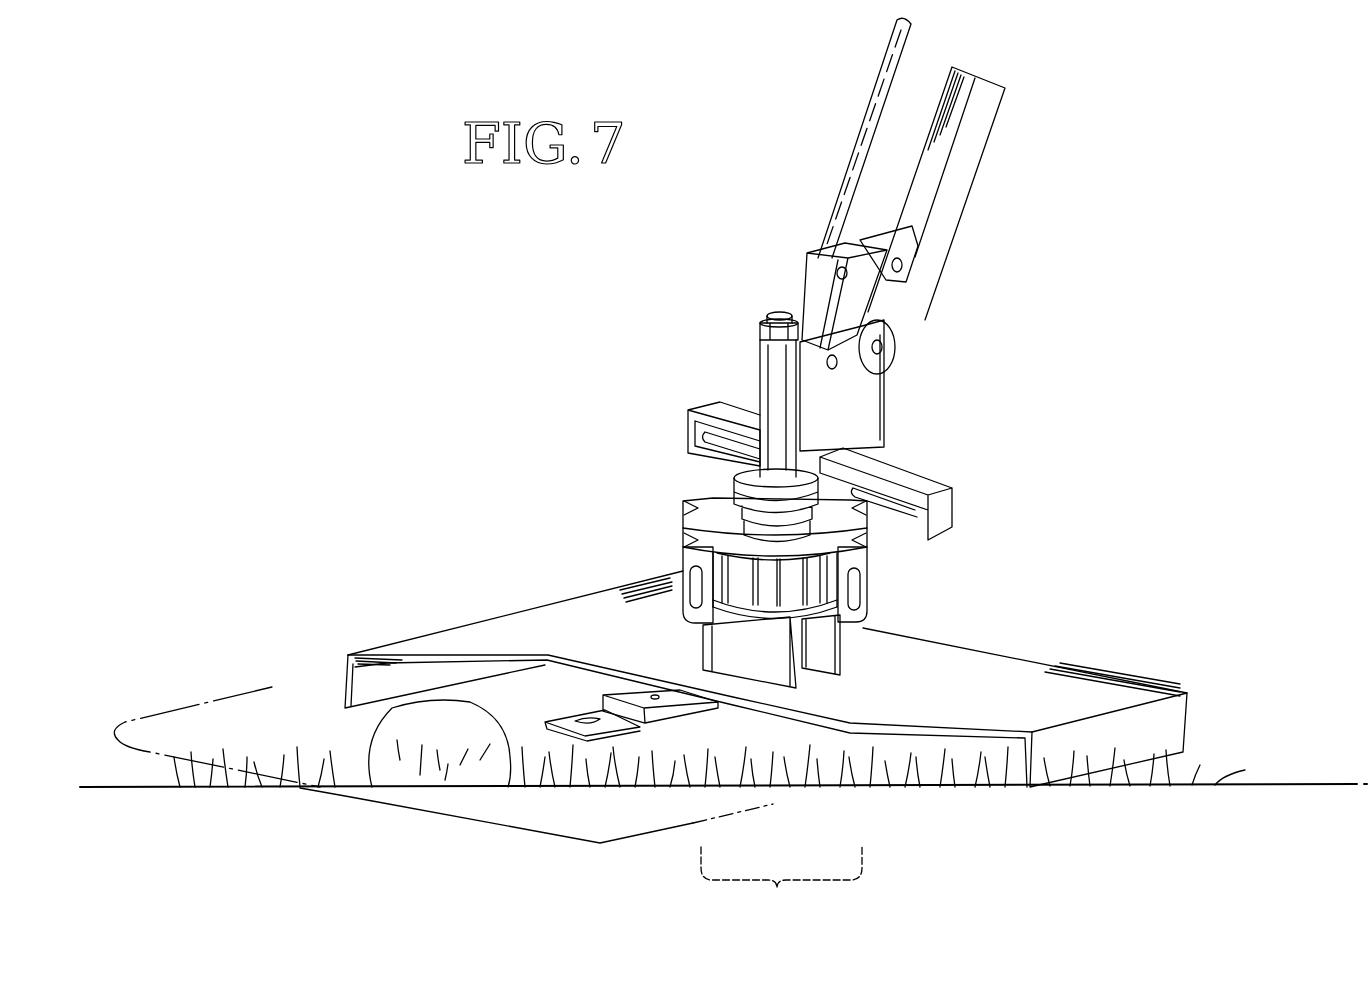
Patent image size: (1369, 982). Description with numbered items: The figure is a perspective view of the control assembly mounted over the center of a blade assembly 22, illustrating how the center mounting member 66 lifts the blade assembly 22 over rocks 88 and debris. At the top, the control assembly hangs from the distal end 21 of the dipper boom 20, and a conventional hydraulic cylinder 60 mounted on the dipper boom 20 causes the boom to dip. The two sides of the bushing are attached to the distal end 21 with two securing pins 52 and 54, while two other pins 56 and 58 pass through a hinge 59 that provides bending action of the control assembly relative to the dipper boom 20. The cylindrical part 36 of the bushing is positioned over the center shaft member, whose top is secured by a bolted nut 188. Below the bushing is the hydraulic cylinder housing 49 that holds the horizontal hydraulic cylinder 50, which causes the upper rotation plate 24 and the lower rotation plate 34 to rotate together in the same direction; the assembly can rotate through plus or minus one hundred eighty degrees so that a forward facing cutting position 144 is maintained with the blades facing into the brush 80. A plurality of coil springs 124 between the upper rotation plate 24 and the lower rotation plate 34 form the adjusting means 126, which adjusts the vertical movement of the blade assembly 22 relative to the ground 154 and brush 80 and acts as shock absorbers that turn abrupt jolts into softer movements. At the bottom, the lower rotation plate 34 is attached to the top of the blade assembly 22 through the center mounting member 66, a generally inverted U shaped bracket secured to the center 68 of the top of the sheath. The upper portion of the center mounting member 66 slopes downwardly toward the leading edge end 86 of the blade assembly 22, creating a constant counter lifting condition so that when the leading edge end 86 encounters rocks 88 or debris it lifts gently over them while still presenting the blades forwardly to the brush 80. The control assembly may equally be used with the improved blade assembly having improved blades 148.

The dipper boom 20 is at (957, 203).
The distal end 21 is at (920, 300).
The blade assembly 22 is at (1090, 656).
The upper rotation plate 24 is at (683, 520).
The lower rotation plate 34 is at (840, 650).
The cylindrical part 36 is at (760, 376).
The hydraulic cylinder housing 49 is at (930, 475).
The hydraulic cylinder 50 is at (913, 512).
The securing pin 52 is at (884, 349).
The securing pin 54 is at (832, 372).
The pin 56 is at (905, 267).
The pin 58 is at (836, 273).
The hinge 59 is at (892, 338).
The hydraulic cylinder 60 is at (850, 170).
The center mounting member 66 is at (840, 640).
The center 68 is at (881, 786).
The brush 80 is at (255, 790).
The leading edge end 86 is at (997, 783).
The rocks 88 is at (510, 787).
The coil springs 124 is at (817, 580).
The adjusting means 126 is at (781, 882).
The forward facing cutting position 144 is at (333, 789).
The improved blades 148 is at (582, 733).
The ground 154 is at (1145, 790).
The bolted nut 188 is at (760, 326).